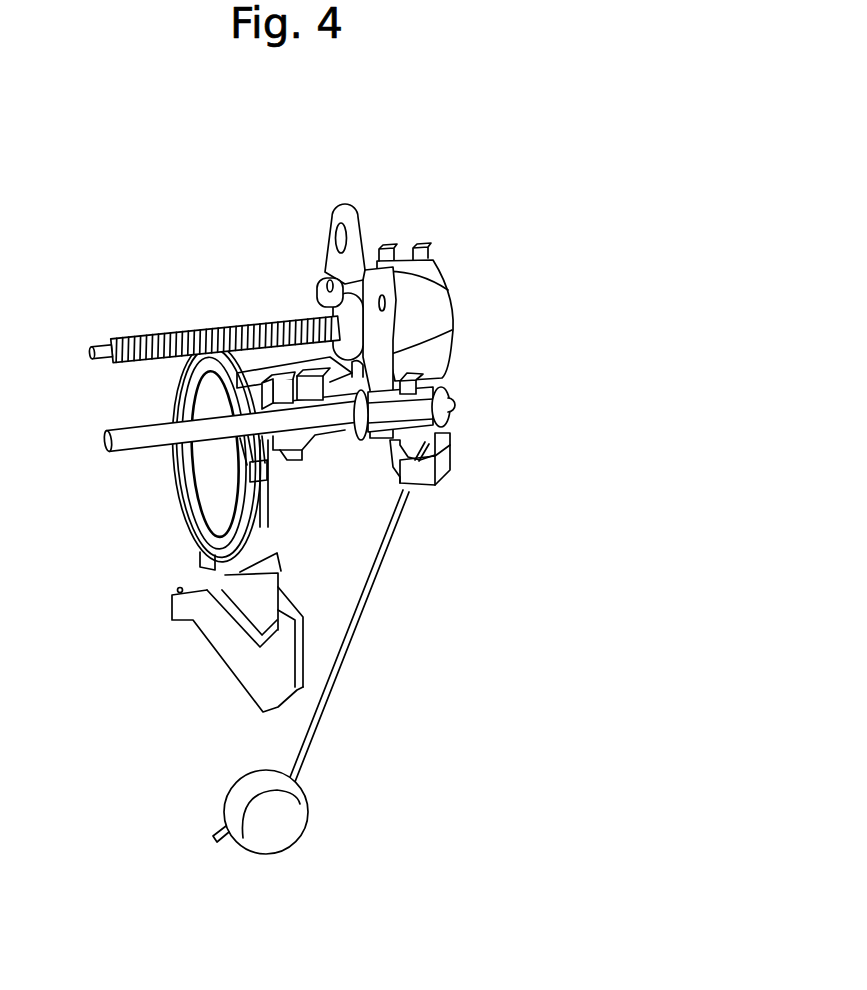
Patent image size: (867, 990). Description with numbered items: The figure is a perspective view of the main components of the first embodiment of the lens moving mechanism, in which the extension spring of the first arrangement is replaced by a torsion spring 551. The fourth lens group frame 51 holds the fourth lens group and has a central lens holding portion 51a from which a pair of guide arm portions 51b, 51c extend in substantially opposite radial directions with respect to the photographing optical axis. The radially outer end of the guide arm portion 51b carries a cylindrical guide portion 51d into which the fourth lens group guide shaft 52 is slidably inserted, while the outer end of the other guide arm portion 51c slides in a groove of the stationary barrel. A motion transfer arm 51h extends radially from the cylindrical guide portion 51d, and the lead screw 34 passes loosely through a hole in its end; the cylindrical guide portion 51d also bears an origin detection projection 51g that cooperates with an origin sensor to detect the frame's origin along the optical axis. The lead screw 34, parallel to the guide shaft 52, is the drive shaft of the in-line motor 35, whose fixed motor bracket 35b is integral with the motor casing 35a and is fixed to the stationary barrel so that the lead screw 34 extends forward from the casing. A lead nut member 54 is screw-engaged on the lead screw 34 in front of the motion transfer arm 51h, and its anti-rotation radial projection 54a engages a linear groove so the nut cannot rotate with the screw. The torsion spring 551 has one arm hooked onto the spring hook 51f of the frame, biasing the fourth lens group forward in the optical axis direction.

The lead screw 34 is at (143, 337).
The motor 35 is at (386, 283).
The motor casing 35a is at (440, 300).
The fixed motor bracket 35b is at (342, 208).
The fourth lens group frame 51 is at (304, 513).
The central lens holding portion 51a is at (207, 527).
The guide arm portion 51b is at (293, 456).
The guide arm portion 51c is at (263, 566).
The cylindrical guide portion 51d is at (436, 392).
The spring hook 51f is at (425, 478).
The origin detection projection 51g is at (432, 400).
The motion transfer arm 51h is at (372, 358).
The fourth lens group guide shaft 52 is at (125, 433).
The lead nut member 54 is at (306, 283).
The anti-rotation radial projection 54a is at (321, 291).
The torsion spring 551 is at (341, 667).